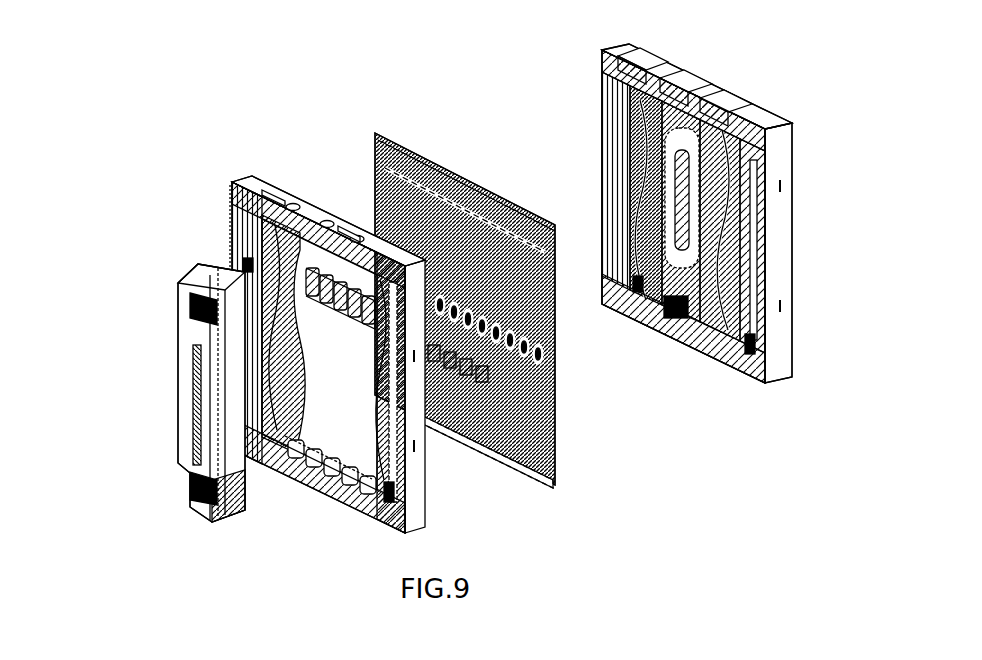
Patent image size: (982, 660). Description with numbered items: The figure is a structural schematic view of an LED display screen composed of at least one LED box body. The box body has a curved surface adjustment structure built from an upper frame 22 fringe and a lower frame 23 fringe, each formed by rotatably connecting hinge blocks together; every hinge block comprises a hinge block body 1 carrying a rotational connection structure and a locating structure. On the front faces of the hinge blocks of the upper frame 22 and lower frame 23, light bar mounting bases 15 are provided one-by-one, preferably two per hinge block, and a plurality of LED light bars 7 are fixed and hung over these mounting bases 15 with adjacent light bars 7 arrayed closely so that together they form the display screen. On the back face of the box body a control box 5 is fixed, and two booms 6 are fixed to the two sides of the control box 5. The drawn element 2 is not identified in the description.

The hinge block body 1 is at (511, 275).
The connector block 2 is at (660, 66).
The control box 5 is at (178, 325).
The boom 6 is at (427, 472).
The light bar 7 is at (403, 144).
The light bar mounting base 15 is at (692, 80).
The upper frame 22 is at (333, 230).
The lower frame 23 is at (345, 500).